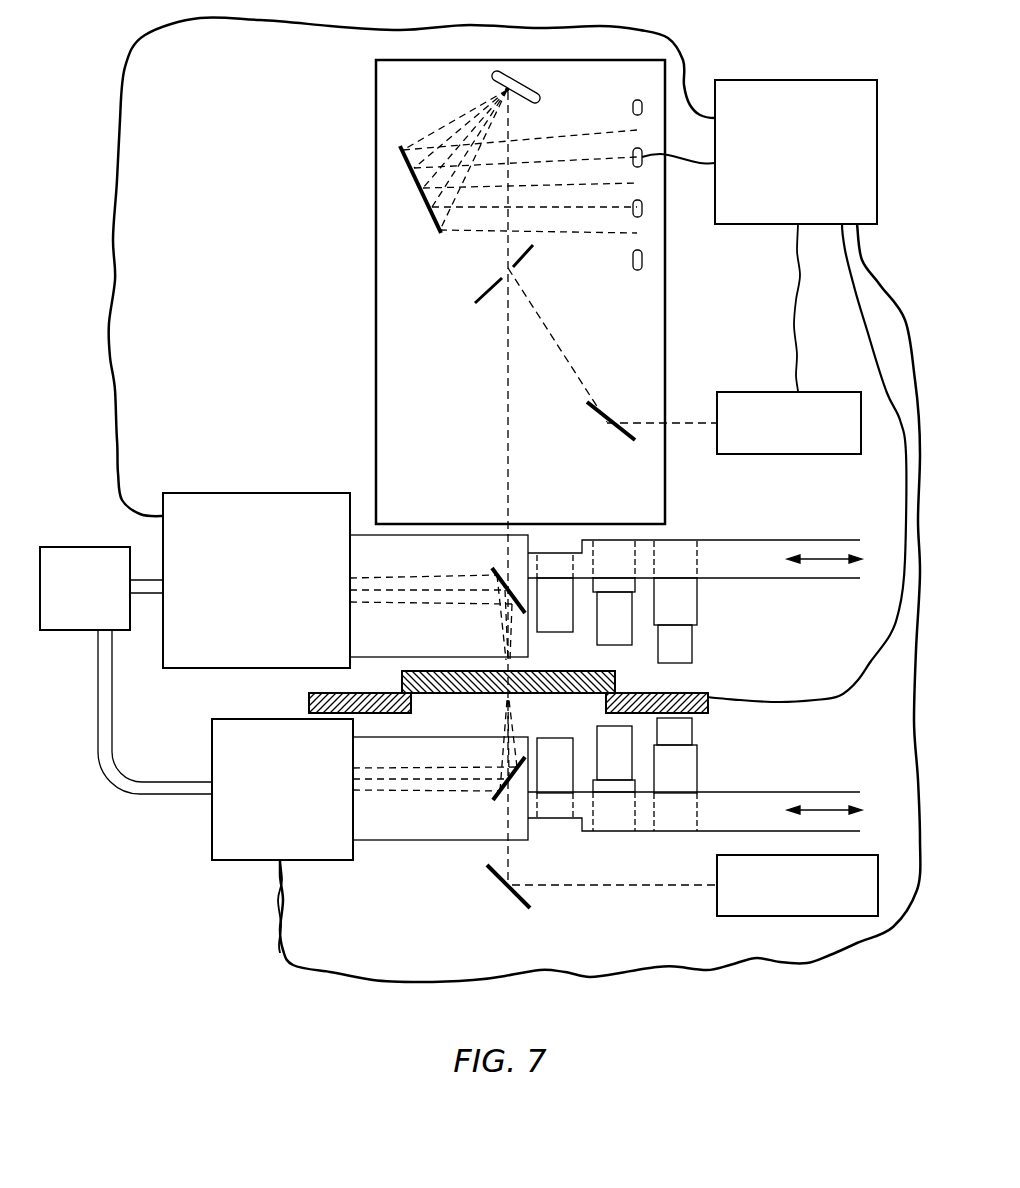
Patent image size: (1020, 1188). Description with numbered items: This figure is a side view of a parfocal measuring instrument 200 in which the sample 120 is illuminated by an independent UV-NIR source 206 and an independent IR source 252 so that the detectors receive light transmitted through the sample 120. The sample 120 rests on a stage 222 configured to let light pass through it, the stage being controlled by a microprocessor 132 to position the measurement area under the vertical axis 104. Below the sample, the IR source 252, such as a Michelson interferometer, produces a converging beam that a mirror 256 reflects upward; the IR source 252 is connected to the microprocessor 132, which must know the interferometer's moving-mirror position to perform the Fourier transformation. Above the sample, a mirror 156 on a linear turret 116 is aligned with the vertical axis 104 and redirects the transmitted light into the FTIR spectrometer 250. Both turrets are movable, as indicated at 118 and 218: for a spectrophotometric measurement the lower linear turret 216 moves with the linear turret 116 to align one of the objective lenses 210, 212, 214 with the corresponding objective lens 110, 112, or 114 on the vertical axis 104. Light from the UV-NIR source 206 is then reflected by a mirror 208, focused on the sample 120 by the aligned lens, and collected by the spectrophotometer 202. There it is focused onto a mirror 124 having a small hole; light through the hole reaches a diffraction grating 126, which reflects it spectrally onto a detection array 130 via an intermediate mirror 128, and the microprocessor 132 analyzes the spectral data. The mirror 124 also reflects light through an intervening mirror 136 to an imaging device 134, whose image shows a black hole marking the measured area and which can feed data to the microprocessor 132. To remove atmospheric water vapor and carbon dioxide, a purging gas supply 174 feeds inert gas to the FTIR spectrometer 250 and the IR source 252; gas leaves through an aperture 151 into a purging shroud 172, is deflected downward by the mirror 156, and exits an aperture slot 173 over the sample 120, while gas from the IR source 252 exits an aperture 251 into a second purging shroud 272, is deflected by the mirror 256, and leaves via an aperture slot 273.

The parfocal measuring instrument 200 is at (263, 127).
The spectrophotometer 202 is at (376, 253).
The diffraction grating 126 is at (545, 98).
The intermediate mirror 128 is at (403, 146).
The detection array 130 is at (637, 271).
The mirror 124 is at (528, 255).
The intervening mirror 136 is at (596, 411).
The microprocessor 132 is at (778, 162).
The imaging device 134 is at (773, 437).
The FTIR spectrometer 250 is at (203, 562).
The purging gas supply 174 is at (66, 602).
The purging shroud 172 is at (359, 570).
The aperture 151 is at (348, 592).
The mirror 156 is at (492, 571).
The aperture slot 173 is at (496, 651).
The vertical axis 104 is at (511, 643).
The objective lens 110 is at (538, 617).
The objective lens 112 is at (597, 627).
The objective lens 114 is at (658, 615).
The linear turret 116 is at (752, 580).
The arm movement direction 118 is at (827, 556).
The sample 120 is at (617, 680).
The stage 222 is at (722, 695).
The IR source 252 is at (234, 767).
The second purging shroud 272 is at (403, 841).
The aperture 251 is at (350, 779).
The mirror 256 is at (493, 797).
The aperture slot 273 is at (494, 741).
The linear turret 216 is at (741, 792).
The lower arm movement direction 218 is at (829, 808).
The objective lens 210 is at (538, 779).
The objective lens 212 is at (597, 766).
The objective lens 214 is at (658, 783).
The UV-NIR source 206 is at (785, 898).
The mirror 208 is at (517, 907).